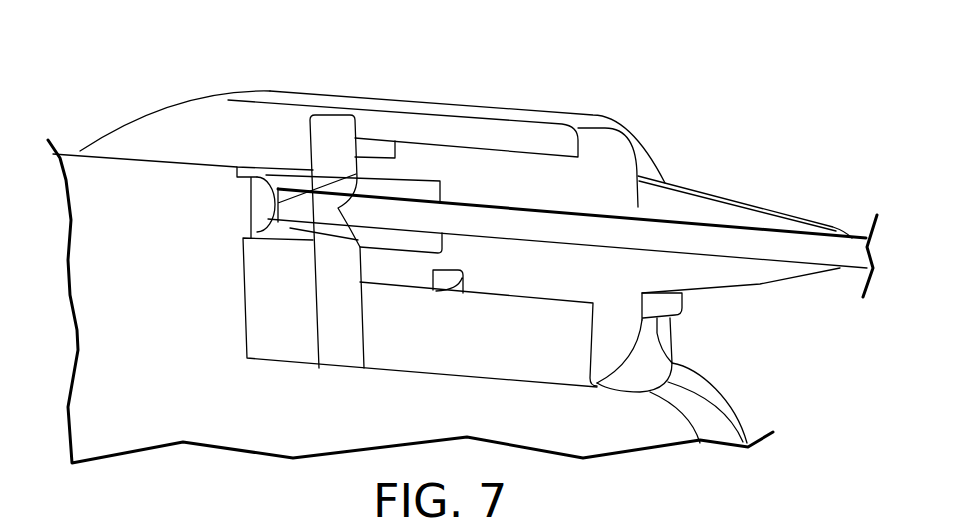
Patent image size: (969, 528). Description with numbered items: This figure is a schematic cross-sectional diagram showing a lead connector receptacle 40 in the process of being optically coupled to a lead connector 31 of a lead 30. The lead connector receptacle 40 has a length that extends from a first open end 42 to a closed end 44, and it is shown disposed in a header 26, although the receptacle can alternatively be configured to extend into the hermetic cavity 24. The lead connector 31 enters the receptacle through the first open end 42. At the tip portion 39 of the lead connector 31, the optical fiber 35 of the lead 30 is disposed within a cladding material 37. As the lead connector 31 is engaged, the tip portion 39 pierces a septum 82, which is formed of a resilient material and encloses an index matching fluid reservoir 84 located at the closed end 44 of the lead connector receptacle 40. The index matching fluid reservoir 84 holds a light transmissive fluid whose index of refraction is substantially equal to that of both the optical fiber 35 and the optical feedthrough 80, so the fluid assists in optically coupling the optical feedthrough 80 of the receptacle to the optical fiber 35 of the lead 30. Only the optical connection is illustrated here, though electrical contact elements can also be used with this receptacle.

The hermetic cavity 24 is at (152, 343).
The header 26 is at (270, 122).
The lead 30 is at (860, 222).
The lead connector 31 is at (602, 160).
The optical fiber 35 is at (670, 237).
The cladding material 37 is at (420, 192).
The tip portion 39 is at (313, 187).
The lead connector receptacle 40 is at (528, 150).
The first open end 42 is at (525, 300).
The closed end 44 is at (237, 103).
The optical feedthrough 80 is at (249, 190).
The septum 82 is at (338, 155).
The index matching fluid reservoir 84 is at (292, 236).